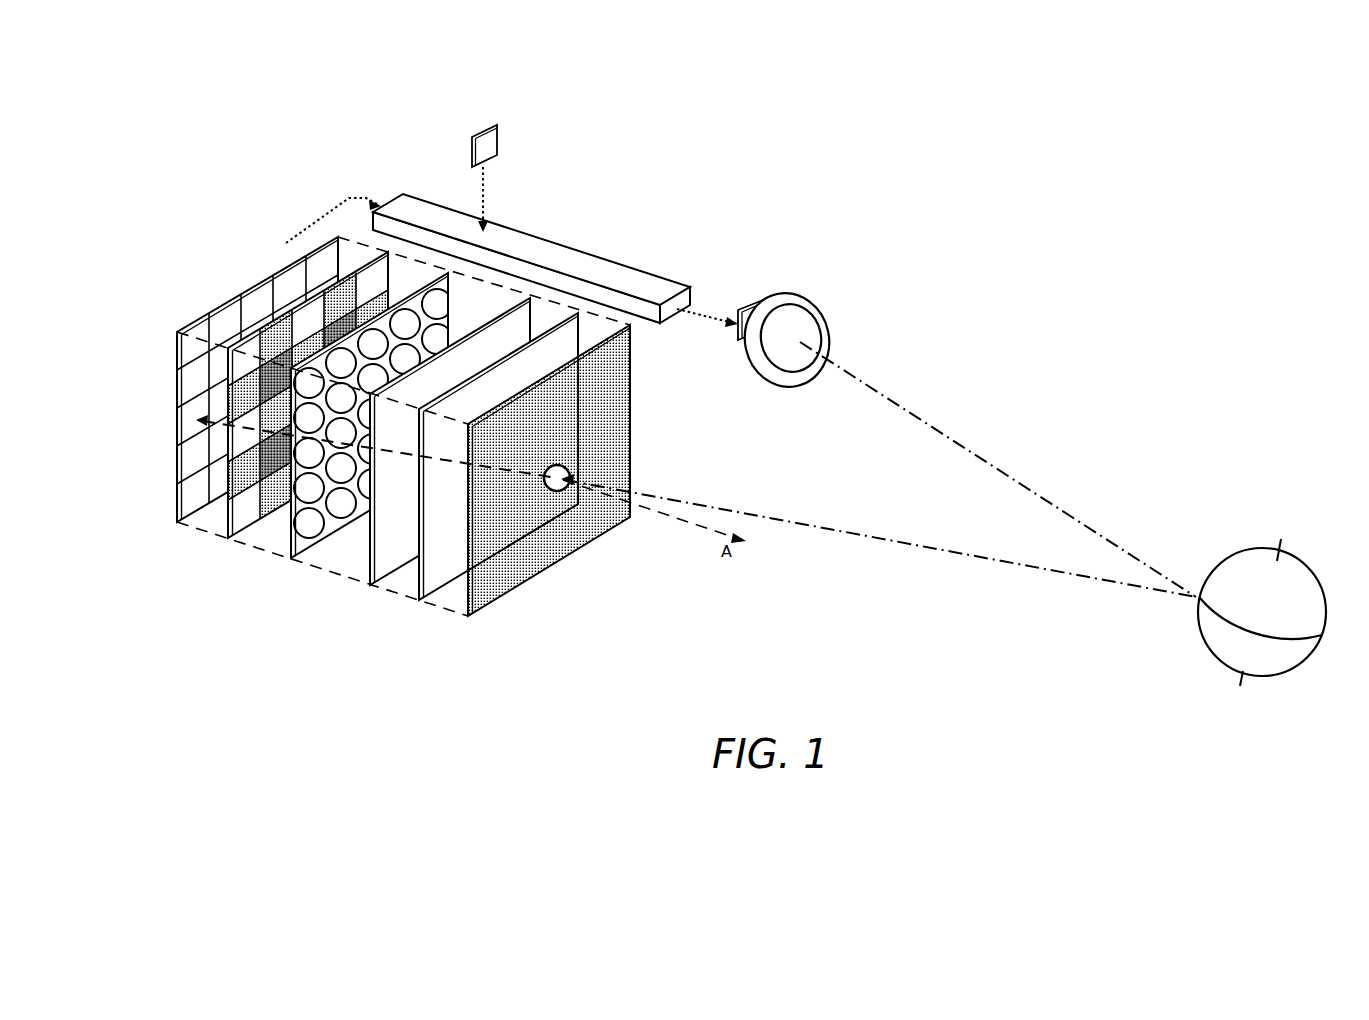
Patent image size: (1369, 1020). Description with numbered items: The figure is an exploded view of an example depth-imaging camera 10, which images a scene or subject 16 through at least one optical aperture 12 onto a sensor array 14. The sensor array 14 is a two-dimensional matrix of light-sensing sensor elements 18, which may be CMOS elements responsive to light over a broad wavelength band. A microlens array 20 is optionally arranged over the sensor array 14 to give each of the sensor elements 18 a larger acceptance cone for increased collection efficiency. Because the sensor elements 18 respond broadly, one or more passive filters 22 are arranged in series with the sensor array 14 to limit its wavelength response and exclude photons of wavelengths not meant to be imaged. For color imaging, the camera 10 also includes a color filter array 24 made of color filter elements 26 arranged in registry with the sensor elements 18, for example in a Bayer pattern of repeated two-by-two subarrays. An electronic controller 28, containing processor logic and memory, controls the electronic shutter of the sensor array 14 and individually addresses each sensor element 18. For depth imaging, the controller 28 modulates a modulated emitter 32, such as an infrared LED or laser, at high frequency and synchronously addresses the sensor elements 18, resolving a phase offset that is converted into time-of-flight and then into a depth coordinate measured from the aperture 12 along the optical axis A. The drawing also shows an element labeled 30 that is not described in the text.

The camera 10 is at (150, 249).
The optical aperture 12 is at (543, 487).
The sensor array 14 is at (177, 438).
The scene or subject 16 is at (1308, 622).
The sensor elements 18 is at (209, 390).
The microlens array 20 is at (287, 540).
The passive filters 22 is at (404, 542).
The color filter array 24 is at (222, 516).
The color filter elements 26 is at (319, 327).
The electronic controller 28 is at (461, 231).
The control unit 30 is at (499, 137).
The modulated emitter 32 is at (738, 337).